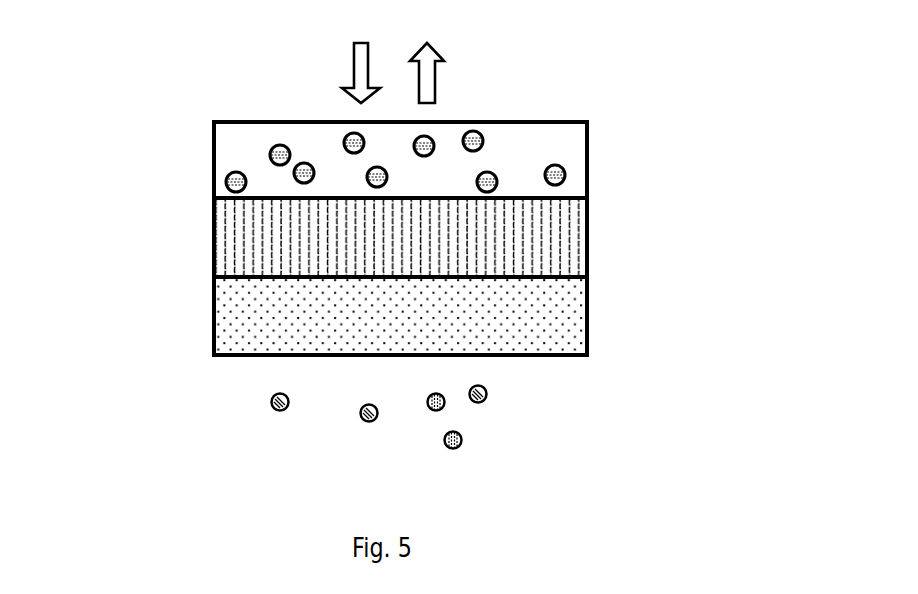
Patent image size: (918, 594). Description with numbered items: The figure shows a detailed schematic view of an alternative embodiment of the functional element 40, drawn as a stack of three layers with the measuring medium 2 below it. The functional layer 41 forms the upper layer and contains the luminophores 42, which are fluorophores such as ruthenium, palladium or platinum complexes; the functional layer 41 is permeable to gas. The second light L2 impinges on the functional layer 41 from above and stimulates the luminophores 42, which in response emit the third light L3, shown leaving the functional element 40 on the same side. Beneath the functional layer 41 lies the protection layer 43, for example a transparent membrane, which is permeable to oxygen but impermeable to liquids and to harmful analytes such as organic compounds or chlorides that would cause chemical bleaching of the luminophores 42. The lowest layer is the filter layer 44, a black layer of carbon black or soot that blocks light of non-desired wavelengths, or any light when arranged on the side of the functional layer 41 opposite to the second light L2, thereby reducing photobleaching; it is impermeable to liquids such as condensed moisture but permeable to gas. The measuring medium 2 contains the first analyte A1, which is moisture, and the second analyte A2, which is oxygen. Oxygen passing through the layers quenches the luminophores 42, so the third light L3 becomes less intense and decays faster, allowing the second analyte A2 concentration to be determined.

The functional element 40 is at (106, 134).
The functional layer 41 is at (205, 166).
The luminophores 42 is at (302, 162).
The protection layer 43 is at (200, 248).
The filter layer 44 is at (200, 325).
The measuring medium 2 is at (153, 458).
The first analyte A1 is at (446, 446).
The second analyte A2 is at (274, 409).
The second light L2 is at (361, 57).
The third light L3 is at (427, 57).